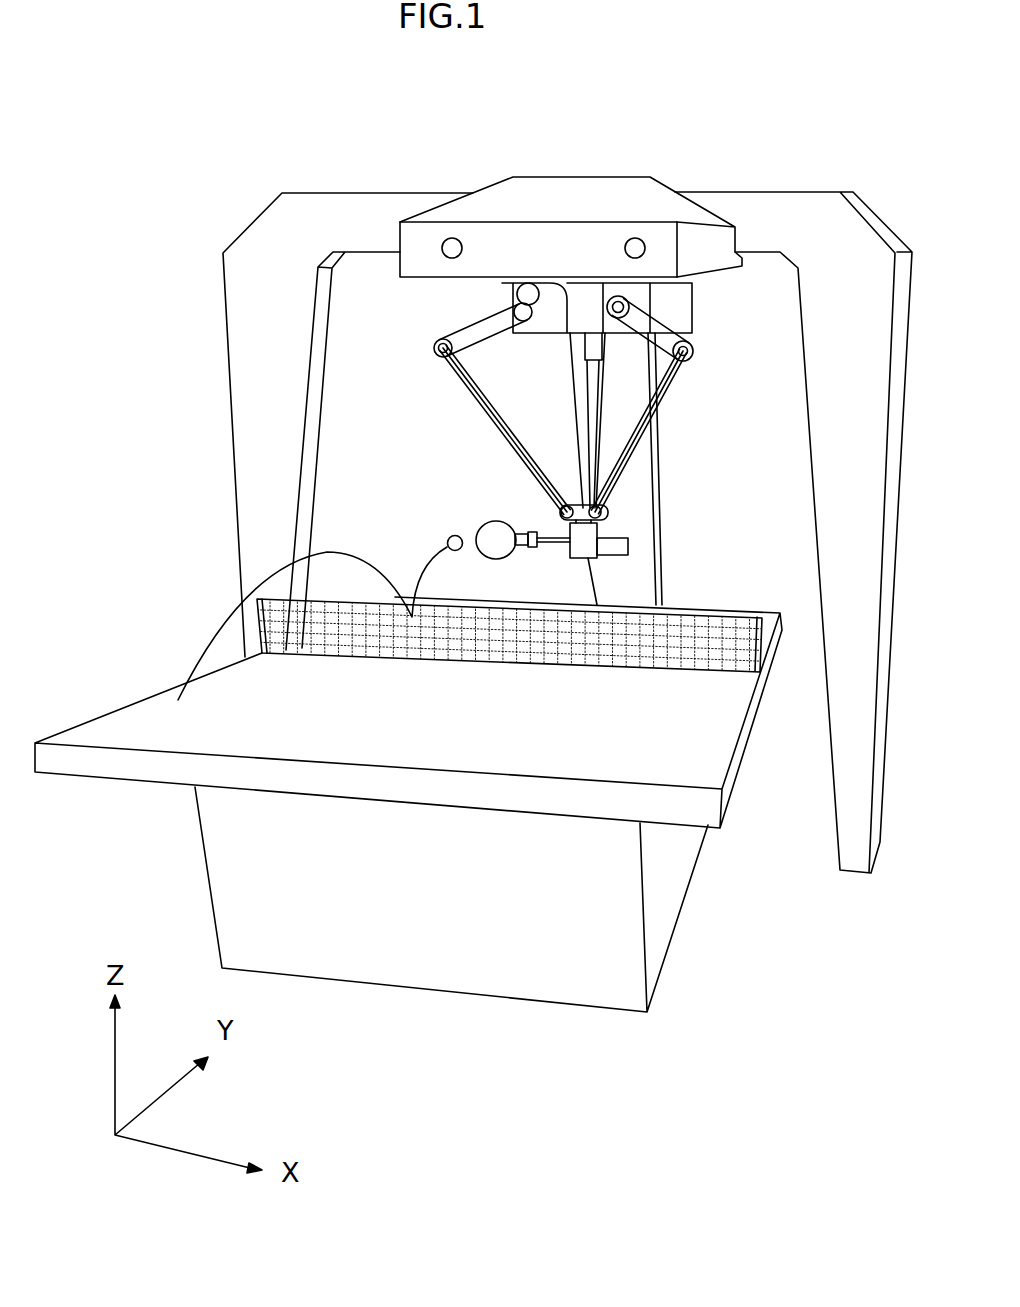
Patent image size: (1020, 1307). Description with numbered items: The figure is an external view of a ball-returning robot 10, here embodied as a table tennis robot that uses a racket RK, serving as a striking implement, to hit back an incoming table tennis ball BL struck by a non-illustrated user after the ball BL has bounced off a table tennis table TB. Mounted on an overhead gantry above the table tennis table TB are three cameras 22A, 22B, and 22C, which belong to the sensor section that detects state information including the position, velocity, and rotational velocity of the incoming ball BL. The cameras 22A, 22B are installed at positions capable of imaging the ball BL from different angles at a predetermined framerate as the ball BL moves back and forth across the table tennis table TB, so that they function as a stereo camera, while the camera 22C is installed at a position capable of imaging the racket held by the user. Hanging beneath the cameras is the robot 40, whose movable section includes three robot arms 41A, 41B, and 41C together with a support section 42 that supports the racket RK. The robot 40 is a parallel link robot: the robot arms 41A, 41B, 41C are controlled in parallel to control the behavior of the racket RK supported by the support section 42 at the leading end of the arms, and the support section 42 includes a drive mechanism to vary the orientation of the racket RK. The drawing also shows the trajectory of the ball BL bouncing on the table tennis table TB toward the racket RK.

The ball-returning robot 10 is at (623, 112).
The camera 22A is at (452, 238).
The camera 22B is at (636, 238).
The camera 22C is at (531, 283).
The robot 40 is at (585, 450).
The robot arm 41A is at (470, 390).
The robot arm 41B is at (574, 382).
The robot arm 41C is at (688, 380).
The support section 42 is at (574, 557).
The racket RK is at (500, 519).
The ball BL is at (448, 541).
The table tennis table TB is at (713, 742).